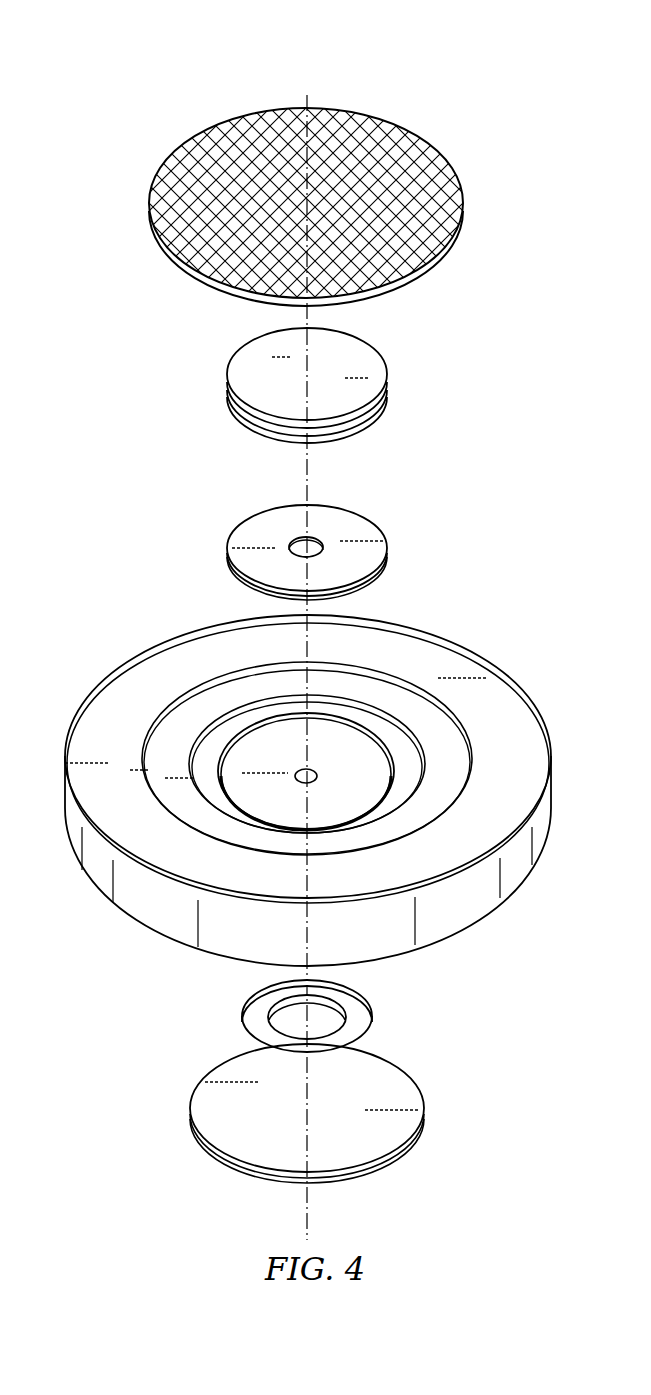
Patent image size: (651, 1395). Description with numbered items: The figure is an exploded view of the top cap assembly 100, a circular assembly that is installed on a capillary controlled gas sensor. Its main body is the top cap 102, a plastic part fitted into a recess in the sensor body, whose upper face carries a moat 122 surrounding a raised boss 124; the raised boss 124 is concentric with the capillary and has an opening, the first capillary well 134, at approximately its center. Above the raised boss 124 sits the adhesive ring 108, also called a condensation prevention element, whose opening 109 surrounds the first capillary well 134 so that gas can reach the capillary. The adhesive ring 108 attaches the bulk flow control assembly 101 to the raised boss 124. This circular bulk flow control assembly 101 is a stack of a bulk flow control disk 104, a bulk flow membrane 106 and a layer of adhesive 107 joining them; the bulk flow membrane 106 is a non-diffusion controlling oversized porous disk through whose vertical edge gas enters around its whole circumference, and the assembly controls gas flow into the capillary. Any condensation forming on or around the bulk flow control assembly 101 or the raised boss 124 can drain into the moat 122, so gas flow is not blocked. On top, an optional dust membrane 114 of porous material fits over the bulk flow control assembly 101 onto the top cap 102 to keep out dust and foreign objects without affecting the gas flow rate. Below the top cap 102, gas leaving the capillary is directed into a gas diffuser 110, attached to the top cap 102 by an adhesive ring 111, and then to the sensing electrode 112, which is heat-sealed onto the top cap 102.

The top cap assembly 100 is at (480, 89).
The dust membrane 114 is at (461, 246).
The bulk flow control assembly 101 is at (310, 390).
The bulk flow control disk 104 is at (352, 350).
The bulk flow membrane 106 is at (380, 426).
The layer of adhesive 107 is at (343, 430).
The adhesive ring 108 is at (302, 543).
The opening 109 is at (320, 539).
The top cap 102 is at (308, 790).
The moat 122 is at (208, 765).
The raised boss 124 is at (322, 818).
The first capillary well 134 is at (315, 774).
The gas diffuser 110 is at (307, 1016).
The adhesive ring 111 is at (253, 1012).
The sensing electrode 112 is at (215, 1127).